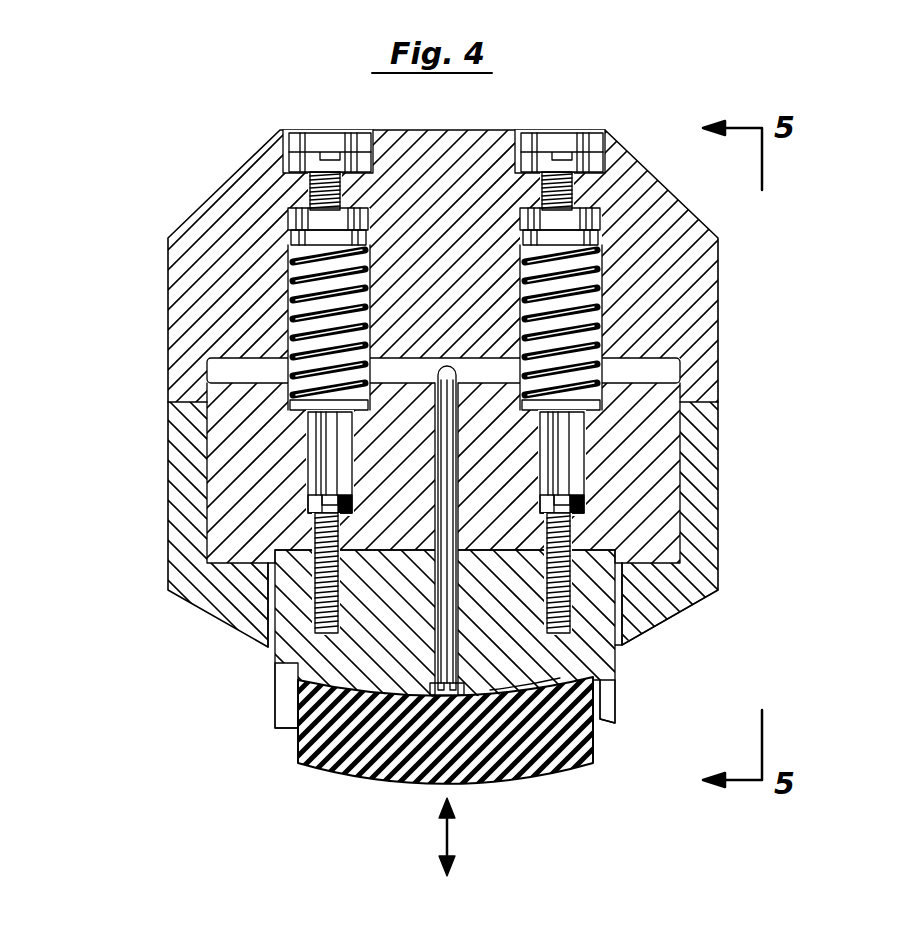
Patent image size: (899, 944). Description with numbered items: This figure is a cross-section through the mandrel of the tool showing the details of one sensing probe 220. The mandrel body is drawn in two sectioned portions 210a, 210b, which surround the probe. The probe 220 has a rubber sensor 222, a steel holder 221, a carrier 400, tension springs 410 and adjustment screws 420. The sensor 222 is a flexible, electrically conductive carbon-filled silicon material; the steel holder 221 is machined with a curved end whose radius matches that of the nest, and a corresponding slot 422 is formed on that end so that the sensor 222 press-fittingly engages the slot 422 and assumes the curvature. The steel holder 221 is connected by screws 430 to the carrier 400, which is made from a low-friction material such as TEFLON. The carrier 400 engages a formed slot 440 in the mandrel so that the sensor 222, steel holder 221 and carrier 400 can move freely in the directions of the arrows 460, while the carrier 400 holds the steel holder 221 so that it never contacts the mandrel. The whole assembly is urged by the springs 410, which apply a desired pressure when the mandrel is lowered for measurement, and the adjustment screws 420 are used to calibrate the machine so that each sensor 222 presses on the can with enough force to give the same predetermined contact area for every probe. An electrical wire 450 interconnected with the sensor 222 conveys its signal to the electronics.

The upper housing body 210a is at (708, 336).
The lower housing body 210b is at (705, 485).
The probe 220 is at (695, 627).
The steel holder 221 is at (616, 668).
The sensor 222 is at (526, 748).
The carrier 400 is at (650, 489).
The tension springs 410 is at (371, 292).
The adjustment screws 420 is at (312, 140).
The slot 422 is at (500, 698).
The screws 430 is at (339, 610).
The formed slot 440 is at (240, 372).
The electrical wire 450 is at (452, 508).
The arrows 460 is at (458, 838).